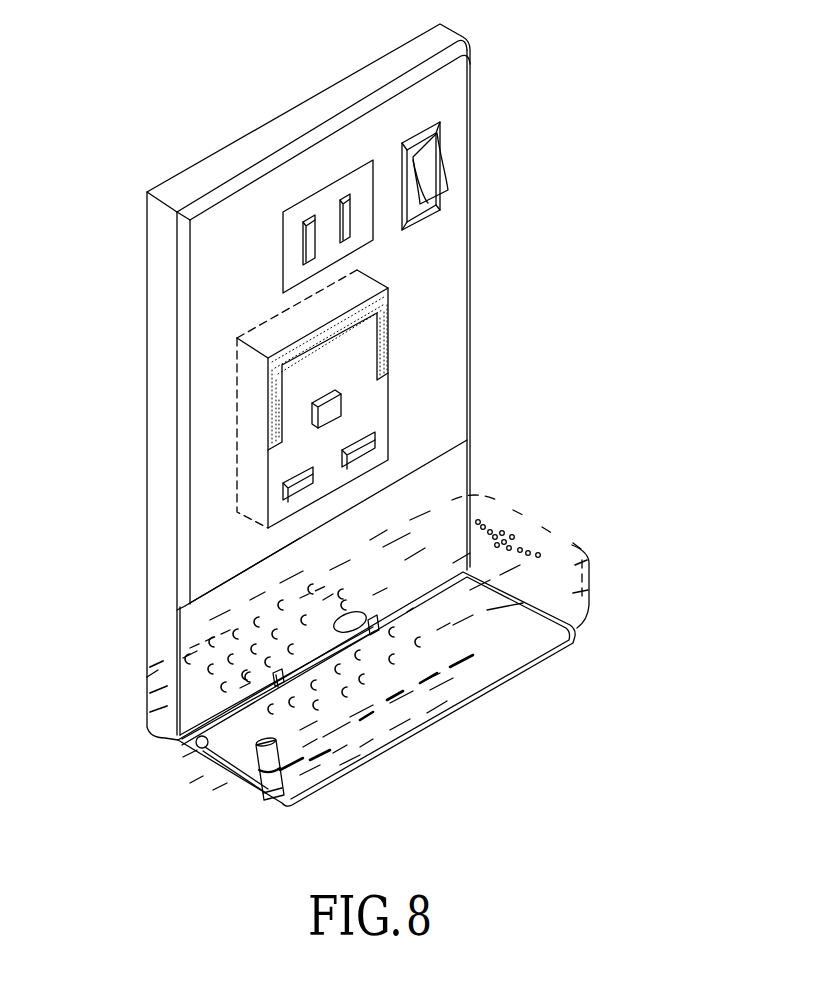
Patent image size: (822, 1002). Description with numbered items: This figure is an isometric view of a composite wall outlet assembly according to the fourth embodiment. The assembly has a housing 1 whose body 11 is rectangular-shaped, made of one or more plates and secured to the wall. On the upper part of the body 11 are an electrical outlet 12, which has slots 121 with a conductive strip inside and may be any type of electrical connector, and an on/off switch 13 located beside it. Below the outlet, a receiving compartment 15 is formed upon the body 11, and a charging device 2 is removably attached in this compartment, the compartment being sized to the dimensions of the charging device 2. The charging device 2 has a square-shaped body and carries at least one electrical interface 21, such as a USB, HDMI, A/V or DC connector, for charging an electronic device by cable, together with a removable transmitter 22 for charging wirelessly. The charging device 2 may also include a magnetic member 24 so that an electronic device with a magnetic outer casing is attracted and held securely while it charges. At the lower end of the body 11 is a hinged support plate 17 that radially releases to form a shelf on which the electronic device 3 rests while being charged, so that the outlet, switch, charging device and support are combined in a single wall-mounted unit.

The housing 1 is at (224, 138).
The body 11 is at (455, 95).
The electrical outlet 12 is at (326, 207).
The slots 121 is at (347, 217).
The on/off switch 13 is at (430, 172).
The charging device 2 is at (388, 337).
The transmitter 22 is at (340, 413).
The magnetic member 24 is at (275, 395).
The electrical interface 21 is at (300, 470).
The receiving compartment 15 is at (268, 468).
The electronic device 3 is at (555, 524).
The hinged support plate 17 is at (432, 724).